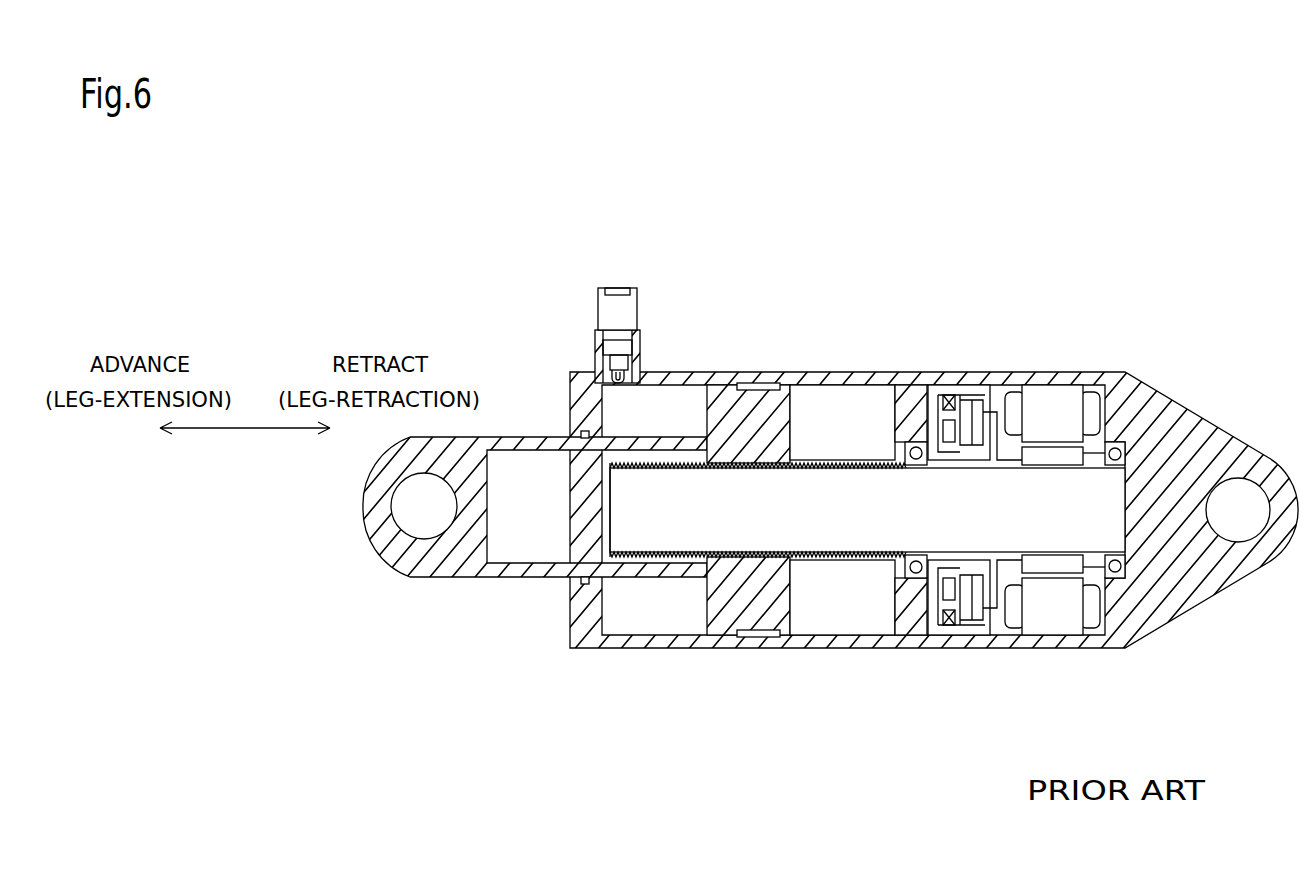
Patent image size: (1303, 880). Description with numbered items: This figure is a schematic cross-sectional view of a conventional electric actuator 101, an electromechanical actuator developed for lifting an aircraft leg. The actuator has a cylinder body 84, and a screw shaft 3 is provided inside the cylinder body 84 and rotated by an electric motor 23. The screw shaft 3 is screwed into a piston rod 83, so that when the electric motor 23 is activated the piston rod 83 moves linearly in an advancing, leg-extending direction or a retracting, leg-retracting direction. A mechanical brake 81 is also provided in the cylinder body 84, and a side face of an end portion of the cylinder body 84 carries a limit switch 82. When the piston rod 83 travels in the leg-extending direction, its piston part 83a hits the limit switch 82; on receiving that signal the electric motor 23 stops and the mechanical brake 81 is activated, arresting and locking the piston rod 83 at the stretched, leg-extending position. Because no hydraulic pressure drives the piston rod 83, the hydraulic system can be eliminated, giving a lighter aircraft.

The electric actuator 101 is at (1210, 195).
The piston rod 83 is at (513, 578).
The piston part 83a is at (713, 391).
The cylinder body 84 is at (830, 383).
The screw shaft 3 is at (675, 533).
The mechanical brake 81 is at (957, 392).
The electric motor 23 is at (1050, 400).
The limit switch 82 is at (595, 307).